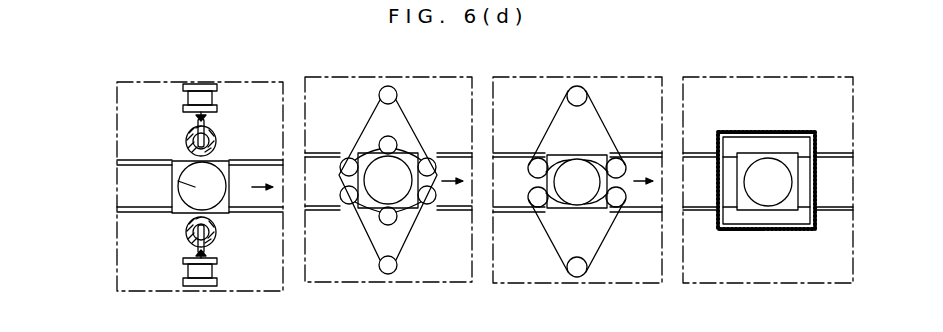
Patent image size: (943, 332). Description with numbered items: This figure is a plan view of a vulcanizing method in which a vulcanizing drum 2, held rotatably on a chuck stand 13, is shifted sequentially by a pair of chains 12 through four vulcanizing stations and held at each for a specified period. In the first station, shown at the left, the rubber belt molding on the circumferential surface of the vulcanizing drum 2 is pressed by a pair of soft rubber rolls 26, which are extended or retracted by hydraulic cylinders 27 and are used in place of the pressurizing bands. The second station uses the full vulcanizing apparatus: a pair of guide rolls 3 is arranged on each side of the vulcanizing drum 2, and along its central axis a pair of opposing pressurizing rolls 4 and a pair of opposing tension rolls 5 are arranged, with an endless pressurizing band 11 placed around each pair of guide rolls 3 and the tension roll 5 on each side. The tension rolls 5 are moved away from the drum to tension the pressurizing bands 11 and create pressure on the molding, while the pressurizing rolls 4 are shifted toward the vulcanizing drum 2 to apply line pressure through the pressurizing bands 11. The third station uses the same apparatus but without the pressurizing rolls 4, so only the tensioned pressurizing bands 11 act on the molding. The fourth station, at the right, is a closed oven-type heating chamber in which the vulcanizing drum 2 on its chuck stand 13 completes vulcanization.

The vulcanizing drum 2 is at (212, 170).
The guide rolls 3 is at (346, 203).
The pressurizing rolls 4 is at (392, 142).
The tension rolls 5 is at (397, 304).
The pressurizing band 11 is at (362, 128).
The chains 12 is at (133, 210).
The chuck stand 13 is at (220, 212).
The soft rubber rolls 26 is at (186, 138).
The hydraulic cylinders 27 is at (183, 98).